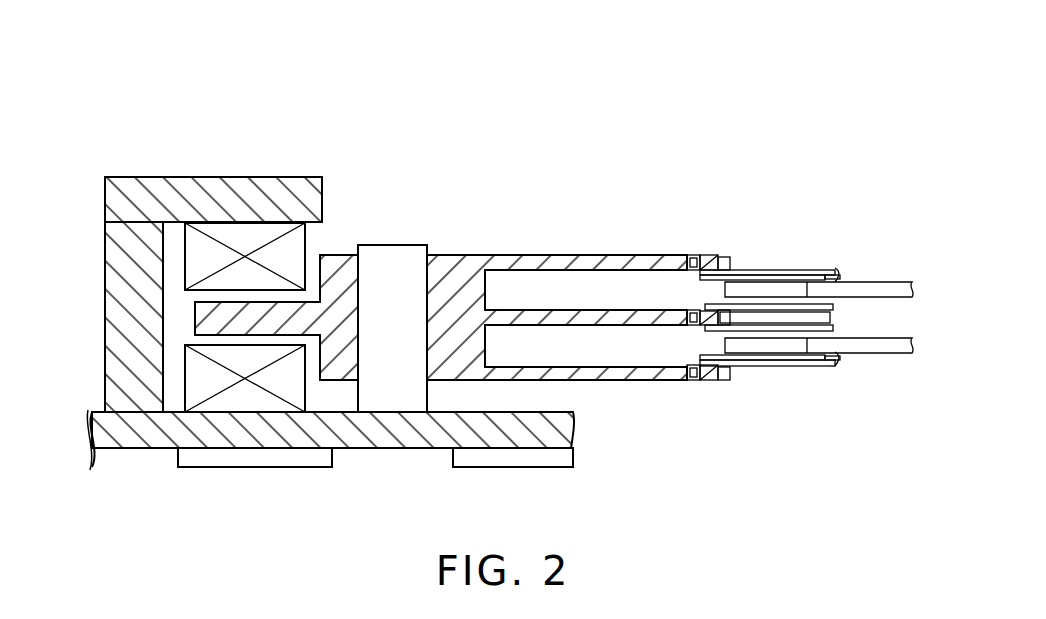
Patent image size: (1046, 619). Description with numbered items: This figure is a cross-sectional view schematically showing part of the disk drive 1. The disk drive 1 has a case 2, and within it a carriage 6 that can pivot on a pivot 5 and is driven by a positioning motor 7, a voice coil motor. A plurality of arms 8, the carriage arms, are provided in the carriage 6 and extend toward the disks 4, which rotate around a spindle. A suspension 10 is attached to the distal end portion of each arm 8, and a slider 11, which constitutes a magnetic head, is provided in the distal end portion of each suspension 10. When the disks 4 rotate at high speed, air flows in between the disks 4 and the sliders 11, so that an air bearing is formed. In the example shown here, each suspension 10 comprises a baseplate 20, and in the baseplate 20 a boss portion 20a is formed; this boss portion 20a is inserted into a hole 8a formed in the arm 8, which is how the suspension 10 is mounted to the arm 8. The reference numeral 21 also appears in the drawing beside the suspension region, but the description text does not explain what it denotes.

The disk drive 1 is at (258, 126).
The case 2 is at (150, 469).
The disks 4 is at (893, 282).
The pivot 5 is at (392, 256).
The carriage 6 is at (540, 252).
The positioning motor 7 is at (243, 398).
The arm 8 is at (630, 254).
The hole 8a is at (701, 256).
The suspension 10 is at (808, 300).
The slider 11 is at (843, 277).
The baseplate 20 is at (723, 258).
The boss portion 20a is at (693, 256).
The terminal plate 21 is at (752, 266).